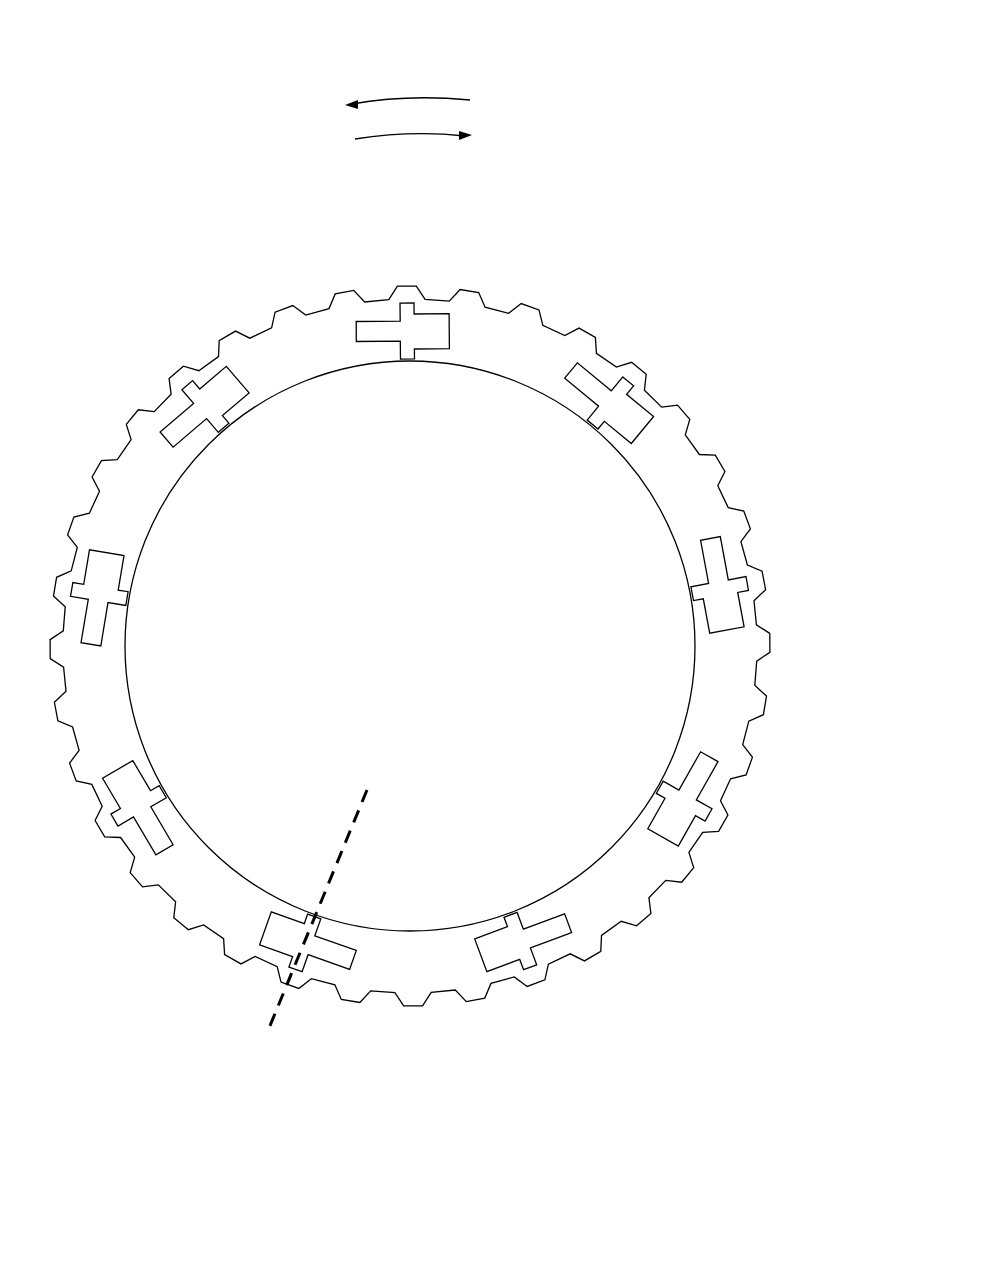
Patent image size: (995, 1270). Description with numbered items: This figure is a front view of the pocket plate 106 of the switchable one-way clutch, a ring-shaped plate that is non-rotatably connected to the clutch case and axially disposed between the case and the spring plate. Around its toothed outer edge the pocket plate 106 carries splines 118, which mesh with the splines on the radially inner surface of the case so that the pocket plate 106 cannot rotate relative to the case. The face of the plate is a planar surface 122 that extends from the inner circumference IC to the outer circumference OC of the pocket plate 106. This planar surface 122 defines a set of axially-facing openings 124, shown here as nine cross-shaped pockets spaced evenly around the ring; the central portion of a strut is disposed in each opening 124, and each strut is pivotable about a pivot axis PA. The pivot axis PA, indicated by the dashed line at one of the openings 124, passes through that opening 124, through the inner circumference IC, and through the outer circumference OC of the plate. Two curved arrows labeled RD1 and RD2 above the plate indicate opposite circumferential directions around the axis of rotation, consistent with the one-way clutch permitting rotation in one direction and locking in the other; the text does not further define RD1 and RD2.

The pocket plate 106 is at (607, 116).
The splines 118 is at (593, 330).
The planar surface 122 is at (472, 330).
The axially-facing openings 124 is at (385, 325).
The outer circumference OC is at (662, 390).
The inner circumference IC is at (197, 458).
The pivot axis PA is at (270, 1032).
The first rotation direction RD1 is at (450, 138).
The second rotation direction RD2 is at (445, 98).